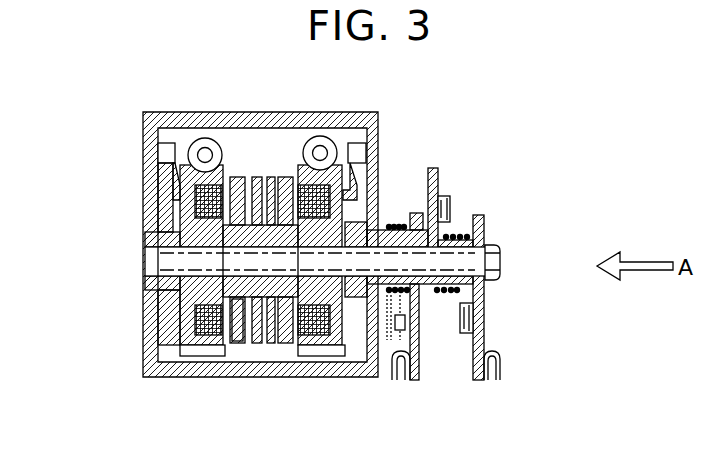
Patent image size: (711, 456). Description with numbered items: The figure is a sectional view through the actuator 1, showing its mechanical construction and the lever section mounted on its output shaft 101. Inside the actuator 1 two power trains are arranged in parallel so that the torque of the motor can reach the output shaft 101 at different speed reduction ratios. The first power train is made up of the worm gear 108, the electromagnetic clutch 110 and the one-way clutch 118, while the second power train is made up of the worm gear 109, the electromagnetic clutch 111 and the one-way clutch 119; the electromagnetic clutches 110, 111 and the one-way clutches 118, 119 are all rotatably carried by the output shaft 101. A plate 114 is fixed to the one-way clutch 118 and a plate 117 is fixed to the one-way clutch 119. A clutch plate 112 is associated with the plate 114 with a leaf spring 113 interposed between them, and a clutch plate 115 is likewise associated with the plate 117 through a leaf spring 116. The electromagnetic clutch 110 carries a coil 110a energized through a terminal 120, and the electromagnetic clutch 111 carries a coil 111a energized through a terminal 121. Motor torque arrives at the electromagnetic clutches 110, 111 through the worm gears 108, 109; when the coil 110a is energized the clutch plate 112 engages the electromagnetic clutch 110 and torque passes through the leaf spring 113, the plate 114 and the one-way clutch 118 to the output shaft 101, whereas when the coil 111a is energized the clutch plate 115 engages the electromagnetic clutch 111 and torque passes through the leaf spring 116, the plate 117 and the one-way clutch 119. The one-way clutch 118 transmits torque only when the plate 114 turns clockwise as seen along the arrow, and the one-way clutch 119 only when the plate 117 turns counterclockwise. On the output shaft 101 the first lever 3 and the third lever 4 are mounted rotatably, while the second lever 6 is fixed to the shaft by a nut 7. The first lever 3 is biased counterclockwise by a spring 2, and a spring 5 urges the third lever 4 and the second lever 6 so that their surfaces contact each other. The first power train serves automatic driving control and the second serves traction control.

The actuator 1 is at (170, 112).
The spring 2 is at (389, 222).
The first lever 3 is at (420, 380).
The third lever 4 is at (436, 168).
The spring 5 is at (467, 215).
The second lever 6 is at (481, 382).
The nut 7 is at (492, 249).
The output shaft 101 is at (158, 232).
The worm gear 108 is at (212, 138).
The worm gear 109 is at (325, 136).
The electromagnetic clutch 110 is at (185, 333).
The coil 110a is at (193, 306).
The electromagnetic clutch 111 is at (333, 342).
The coil 111a is at (357, 348).
The clutch plate 112 is at (231, 342).
The leaf spring 113 is at (237, 342).
The plate 114 is at (252, 342).
The clutch plate 115 is at (292, 342).
The leaf spring 116 is at (283, 342).
The plate 117 is at (267, 342).
The one-way clutch 118 is at (247, 207).
The one-way clutch 119 is at (277, 207).
The terminal 120 is at (163, 150).
The terminal 121 is at (358, 150).